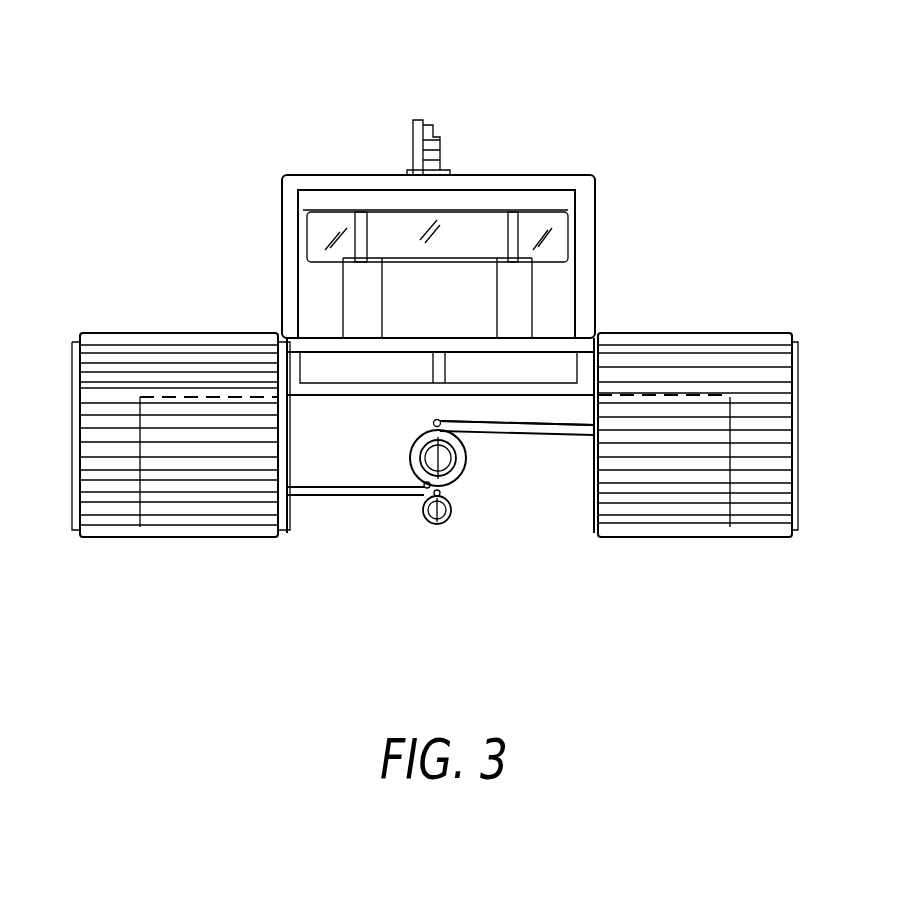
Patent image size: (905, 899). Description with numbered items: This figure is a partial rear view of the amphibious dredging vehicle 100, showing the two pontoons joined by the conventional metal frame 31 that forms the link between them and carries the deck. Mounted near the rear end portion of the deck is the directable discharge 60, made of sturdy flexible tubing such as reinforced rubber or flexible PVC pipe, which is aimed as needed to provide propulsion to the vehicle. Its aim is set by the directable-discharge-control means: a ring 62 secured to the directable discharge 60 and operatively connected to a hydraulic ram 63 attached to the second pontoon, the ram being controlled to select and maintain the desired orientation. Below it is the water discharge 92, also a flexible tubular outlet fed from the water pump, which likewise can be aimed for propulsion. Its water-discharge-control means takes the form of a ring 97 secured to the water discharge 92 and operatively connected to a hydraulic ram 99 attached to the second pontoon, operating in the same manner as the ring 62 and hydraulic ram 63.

The amphibious dredging vehicle 100 is at (195, 147).
The metal frame 31 is at (293, 365).
The ring 62 is at (437, 422).
The hydraulic ram 63 is at (520, 423).
The directable discharge 60 is at (425, 495).
The ring 97 is at (440, 493).
The hydraulic ram 99 is at (345, 497).
The water discharge 92 is at (437, 522).